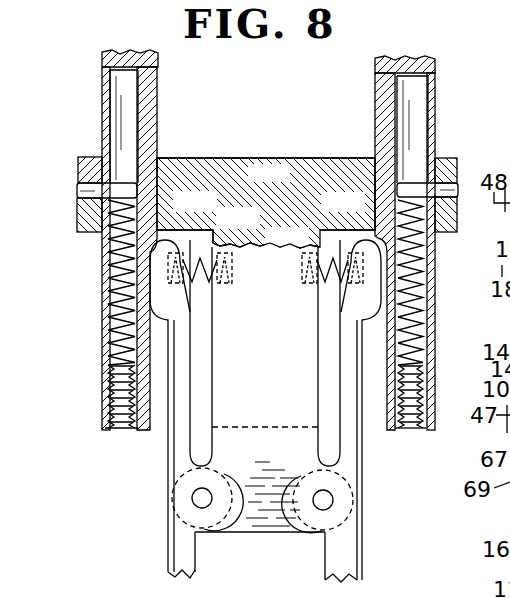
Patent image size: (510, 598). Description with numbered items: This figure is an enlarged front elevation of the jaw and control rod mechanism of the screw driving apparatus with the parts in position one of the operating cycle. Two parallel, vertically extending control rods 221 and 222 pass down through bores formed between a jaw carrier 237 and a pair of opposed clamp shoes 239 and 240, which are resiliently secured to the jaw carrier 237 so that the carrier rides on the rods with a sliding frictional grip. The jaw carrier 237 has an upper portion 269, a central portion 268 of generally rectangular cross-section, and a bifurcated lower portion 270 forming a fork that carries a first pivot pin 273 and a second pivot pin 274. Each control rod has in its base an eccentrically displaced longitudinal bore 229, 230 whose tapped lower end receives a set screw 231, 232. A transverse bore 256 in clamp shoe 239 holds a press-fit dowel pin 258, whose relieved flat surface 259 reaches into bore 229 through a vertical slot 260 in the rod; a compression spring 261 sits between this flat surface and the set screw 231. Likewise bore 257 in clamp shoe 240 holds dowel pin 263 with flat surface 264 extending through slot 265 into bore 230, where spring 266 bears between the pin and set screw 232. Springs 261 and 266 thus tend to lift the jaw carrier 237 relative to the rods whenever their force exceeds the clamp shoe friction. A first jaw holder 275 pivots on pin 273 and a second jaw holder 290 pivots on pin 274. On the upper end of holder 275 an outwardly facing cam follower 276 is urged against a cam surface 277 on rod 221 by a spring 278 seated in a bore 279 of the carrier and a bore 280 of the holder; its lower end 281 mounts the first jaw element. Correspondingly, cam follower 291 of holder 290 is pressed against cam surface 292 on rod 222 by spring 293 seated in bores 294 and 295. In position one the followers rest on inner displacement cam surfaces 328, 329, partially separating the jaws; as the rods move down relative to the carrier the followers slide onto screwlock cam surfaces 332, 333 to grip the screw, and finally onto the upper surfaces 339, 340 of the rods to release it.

The control rod 221 is at (117, 80).
The vertically extending slot 260 is at (103, 101).
The clamp shoe 239 is at (87, 164).
The dowel pin 258 is at (72, 196).
The transversely extending bore 256 is at (87, 232).
The screwlock cam surface 332 is at (130, 248).
The eccentrically displaced bore 229 is at (104, 290).
The inner displacement cam surface 328 is at (125, 305).
The cam follower 276 is at (127, 324).
The cam surface 277 is at (115, 360).
The compression spring 261 is at (117, 371).
The set screw 231 is at (117, 432).
The clamp shoe 240 is at (436, 177).
The vertically extending slot 265 is at (432, 97).
The control rod 222 is at (413, 87).
The transversely extending bore 257 is at (440, 163).
The dowel pin 263 is at (462, 187).
The screwlock cam surface 333 is at (415, 240).
The spring 266 is at (423, 270).
The inner displacement cam surface 329 is at (383, 302).
The eccentrically displaced bore 230 is at (400, 337).
The cam follower 291 is at (420, 350).
The cam surface 292 is at (423, 382).
The set screw 232 is at (400, 440).
The upper portion 269 is at (288, 186).
The flat surface 259 is at (150, 156).
The upper surface 339 is at (200, 160).
The jaw carrier 237 is at (295, 157).
The upper surface 340 is at (370, 180).
The flat surface 264 is at (378, 206).
The bore 280 is at (173, 242).
The bore 279 is at (222, 248).
The bore 294 is at (307, 237).
The spring 278 is at (212, 282).
The spring 293 is at (315, 288).
The central portion 268 is at (257, 386).
The bore 295 is at (327, 307).
The first jaw holder 275 is at (170, 428).
The lower end 281 is at (177, 542).
The first pivot pin 273 is at (202, 498).
The second jaw holder 290 is at (357, 450).
The second pivot pin 274 is at (330, 505).
The lower portion 270 is at (290, 467).